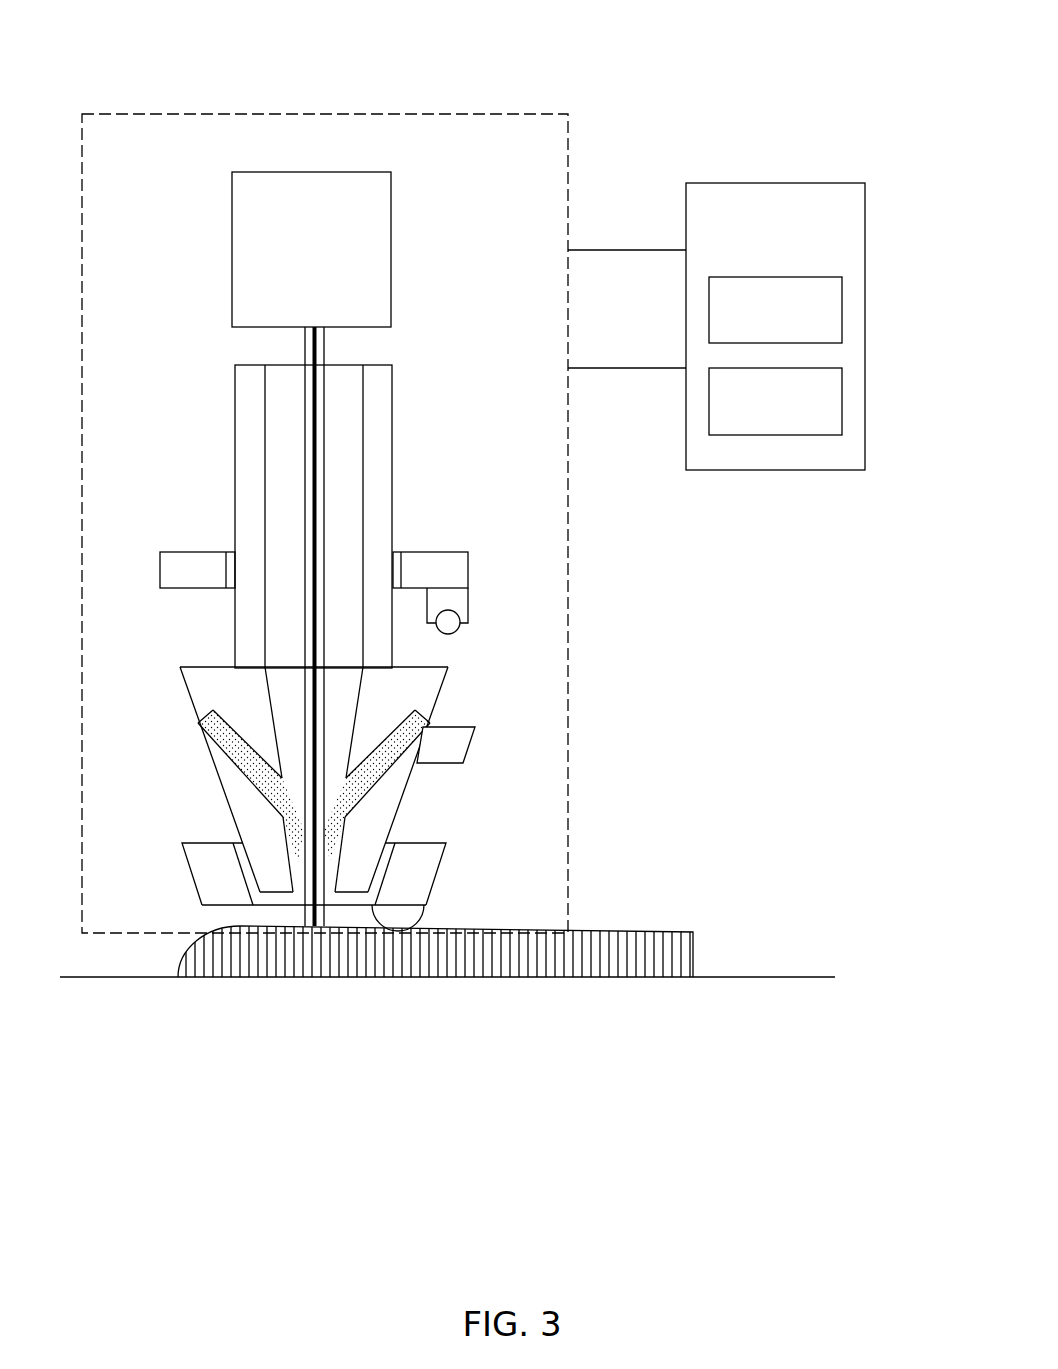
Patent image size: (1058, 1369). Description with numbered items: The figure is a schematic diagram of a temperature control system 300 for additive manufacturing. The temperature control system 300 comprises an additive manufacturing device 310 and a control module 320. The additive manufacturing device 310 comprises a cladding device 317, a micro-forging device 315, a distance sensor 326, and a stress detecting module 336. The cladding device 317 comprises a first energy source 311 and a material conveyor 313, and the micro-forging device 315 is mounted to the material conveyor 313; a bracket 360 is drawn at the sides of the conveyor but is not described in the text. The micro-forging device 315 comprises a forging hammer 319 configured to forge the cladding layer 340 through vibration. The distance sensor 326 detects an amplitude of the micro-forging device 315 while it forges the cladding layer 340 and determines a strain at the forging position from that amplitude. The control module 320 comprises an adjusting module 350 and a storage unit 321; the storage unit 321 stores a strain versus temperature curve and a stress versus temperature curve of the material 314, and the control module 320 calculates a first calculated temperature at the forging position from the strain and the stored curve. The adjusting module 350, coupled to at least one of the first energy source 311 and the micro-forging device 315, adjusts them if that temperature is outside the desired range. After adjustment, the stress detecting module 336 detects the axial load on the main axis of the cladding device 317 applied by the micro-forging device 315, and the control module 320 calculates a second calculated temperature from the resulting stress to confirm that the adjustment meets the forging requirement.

The temperature control system 300 is at (160, 40).
The additive manufacturing device 310 is at (505, 112).
The first energy source 311 is at (232, 247).
The material conveyor 313 is at (232, 698).
The material 314 is at (198, 722).
The micro-forging device 315 is at (420, 855).
The cladding device 317 is at (417, 352).
The forging hammer 319 is at (398, 912).
The control module 320 is at (778, 183).
The storage unit 321 is at (824, 368).
The distance sensor 326 is at (460, 604).
The stress detecting module 336 is at (455, 735).
The cladding layer 340 is at (311, 965).
The adjusting module 350 is at (824, 277).
The mounting bracket 360 is at (438, 552).